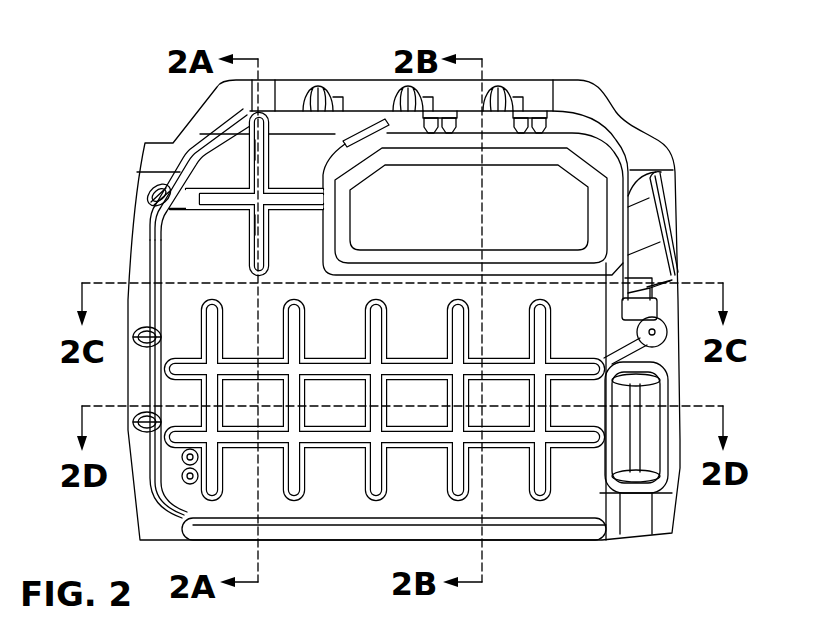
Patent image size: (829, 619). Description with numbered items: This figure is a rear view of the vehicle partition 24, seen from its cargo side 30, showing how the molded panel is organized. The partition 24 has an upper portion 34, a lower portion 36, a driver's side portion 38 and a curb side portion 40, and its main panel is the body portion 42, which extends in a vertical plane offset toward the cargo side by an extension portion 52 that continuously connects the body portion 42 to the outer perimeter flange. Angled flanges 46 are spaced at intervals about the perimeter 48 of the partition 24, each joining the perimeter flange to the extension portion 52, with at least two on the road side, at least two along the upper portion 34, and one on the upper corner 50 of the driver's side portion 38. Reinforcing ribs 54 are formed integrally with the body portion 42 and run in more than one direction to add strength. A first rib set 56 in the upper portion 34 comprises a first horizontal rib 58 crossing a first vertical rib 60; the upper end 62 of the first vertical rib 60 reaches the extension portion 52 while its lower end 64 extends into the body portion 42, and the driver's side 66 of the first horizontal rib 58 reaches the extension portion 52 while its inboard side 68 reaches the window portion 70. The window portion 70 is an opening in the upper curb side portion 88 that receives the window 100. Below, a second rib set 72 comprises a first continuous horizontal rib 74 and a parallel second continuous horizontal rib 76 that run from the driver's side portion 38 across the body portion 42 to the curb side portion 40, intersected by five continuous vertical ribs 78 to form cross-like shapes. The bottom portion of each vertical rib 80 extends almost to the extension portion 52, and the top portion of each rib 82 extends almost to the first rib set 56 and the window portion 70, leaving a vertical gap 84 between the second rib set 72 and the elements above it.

The partition 24 is at (593, 100).
The cargo side 30 is at (645, 150).
The upper portion 34 is at (676, 181).
The lower portion 36 is at (704, 382).
The driver's side portion 38 is at (310, 48).
The curb side portion 40 is at (563, 54).
The body portion 42 is at (177, 238).
The flanges 46 is at (322, 96).
The perimeter 48 is at (540, 542).
The upper corner 50 is at (160, 130).
The extension portion 52 is at (602, 130).
The reinforcing ribs 54 is at (270, 257).
The first rib set 56 is at (157, 210).
The first horizontal rib 58 is at (211, 211).
The first vertical rib 60 is at (268, 147).
The upper end 62 is at (268, 118).
The lower end 64 is at (270, 220).
The driver's side 66 is at (230, 187).
The inboard side 68 is at (278, 187).
The window portion 70 is at (620, 228).
The second rib set 72 is at (622, 348).
The first continuous horizontal rib 74 is at (568, 357).
The second continuous horizontal rib 76 is at (563, 448).
The continuous vertical ribs 78 is at (223, 393).
The bottom portion of each vertical rib 80 is at (551, 485).
The top portion of each rib 82 is at (447, 305).
The vertical gap 84 is at (221, 270).
The upper curb side portion 88 is at (689, 203).
The window 100 is at (430, 217).